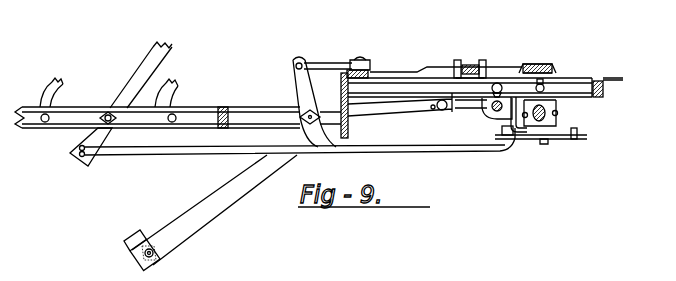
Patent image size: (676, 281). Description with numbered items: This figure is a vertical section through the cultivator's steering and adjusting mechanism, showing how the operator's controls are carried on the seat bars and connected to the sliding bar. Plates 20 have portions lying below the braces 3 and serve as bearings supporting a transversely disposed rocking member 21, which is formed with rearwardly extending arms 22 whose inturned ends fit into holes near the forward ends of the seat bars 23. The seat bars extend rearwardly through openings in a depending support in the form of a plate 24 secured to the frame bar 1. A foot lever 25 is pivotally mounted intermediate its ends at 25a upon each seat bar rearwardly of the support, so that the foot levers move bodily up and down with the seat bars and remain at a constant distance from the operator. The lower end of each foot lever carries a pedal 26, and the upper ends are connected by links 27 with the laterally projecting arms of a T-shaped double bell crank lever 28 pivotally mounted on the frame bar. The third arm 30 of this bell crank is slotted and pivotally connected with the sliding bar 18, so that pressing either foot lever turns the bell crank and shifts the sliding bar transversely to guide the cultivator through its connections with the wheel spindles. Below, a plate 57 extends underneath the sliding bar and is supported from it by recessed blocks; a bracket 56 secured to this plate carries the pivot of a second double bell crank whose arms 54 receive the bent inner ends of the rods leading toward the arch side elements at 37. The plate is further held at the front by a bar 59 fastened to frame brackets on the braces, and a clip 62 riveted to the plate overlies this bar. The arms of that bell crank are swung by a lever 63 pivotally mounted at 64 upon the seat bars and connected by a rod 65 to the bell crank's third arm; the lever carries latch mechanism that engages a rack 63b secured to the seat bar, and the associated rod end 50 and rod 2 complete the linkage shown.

The frame bar 1 is at (347, 63).
The rod 2 is at (613, 77).
The braces 3 is at (584, 85).
The sliding bar 18 is at (470, 65).
The plates 20 is at (500, 122).
The rocking member 21 is at (492, 112).
The arms 22 is at (462, 112).
The seat bars 23 is at (395, 123).
The plate 24 is at (341, 134).
The foot lever 25 is at (211, 201).
The pivot 25a is at (303, 117).
The pedal 26 is at (148, 238).
The links 27 is at (318, 63).
The double bell crank lever 28 is at (380, 66).
The third arm 30 is at (470, 71).
The pin 37 is at (547, 128).
The bar 50 is at (527, 133).
The arms 54 is at (584, 139).
The bracket 56 is at (512, 96).
The plate 57 is at (498, 82).
The bar 59 is at (549, 65).
The clip 62 is at (531, 63).
The lever 63 is at (140, 67).
The rack 63b is at (177, 103).
The pivot 64 is at (108, 109).
The rod 65 is at (183, 157).